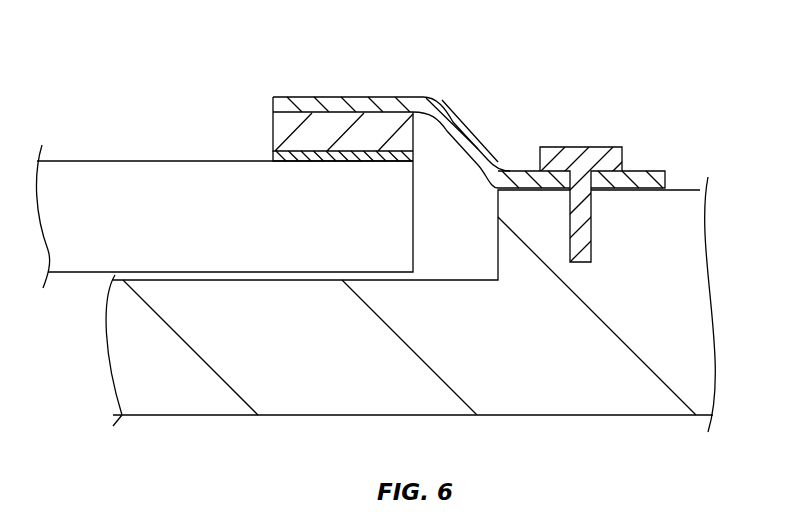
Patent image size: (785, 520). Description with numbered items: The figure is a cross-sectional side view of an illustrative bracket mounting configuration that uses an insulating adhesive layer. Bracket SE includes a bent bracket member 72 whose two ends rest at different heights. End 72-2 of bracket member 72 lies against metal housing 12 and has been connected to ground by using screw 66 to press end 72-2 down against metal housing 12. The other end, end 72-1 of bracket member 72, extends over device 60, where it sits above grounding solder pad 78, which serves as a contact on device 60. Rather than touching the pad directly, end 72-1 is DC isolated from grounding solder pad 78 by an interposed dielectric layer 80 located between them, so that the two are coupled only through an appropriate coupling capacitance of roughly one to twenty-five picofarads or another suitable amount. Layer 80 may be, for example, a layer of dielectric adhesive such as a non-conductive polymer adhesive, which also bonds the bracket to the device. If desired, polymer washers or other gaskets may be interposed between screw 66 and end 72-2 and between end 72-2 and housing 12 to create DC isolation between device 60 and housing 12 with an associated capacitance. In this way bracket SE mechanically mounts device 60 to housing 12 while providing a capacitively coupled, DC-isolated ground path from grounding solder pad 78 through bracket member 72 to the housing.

The metal housing 12 is at (697, 293).
The device 60 is at (105, 170).
The screw 66 is at (583, 150).
The bracket member 72 is at (468, 153).
The end of bracket member 72-1 is at (335, 97).
The end of bracket member 72-2 is at (647, 181).
The grounding solder pad 78 is at (280, 157).
The dielectric layer 80 is at (280, 128).
The bracket SE is at (480, 71).